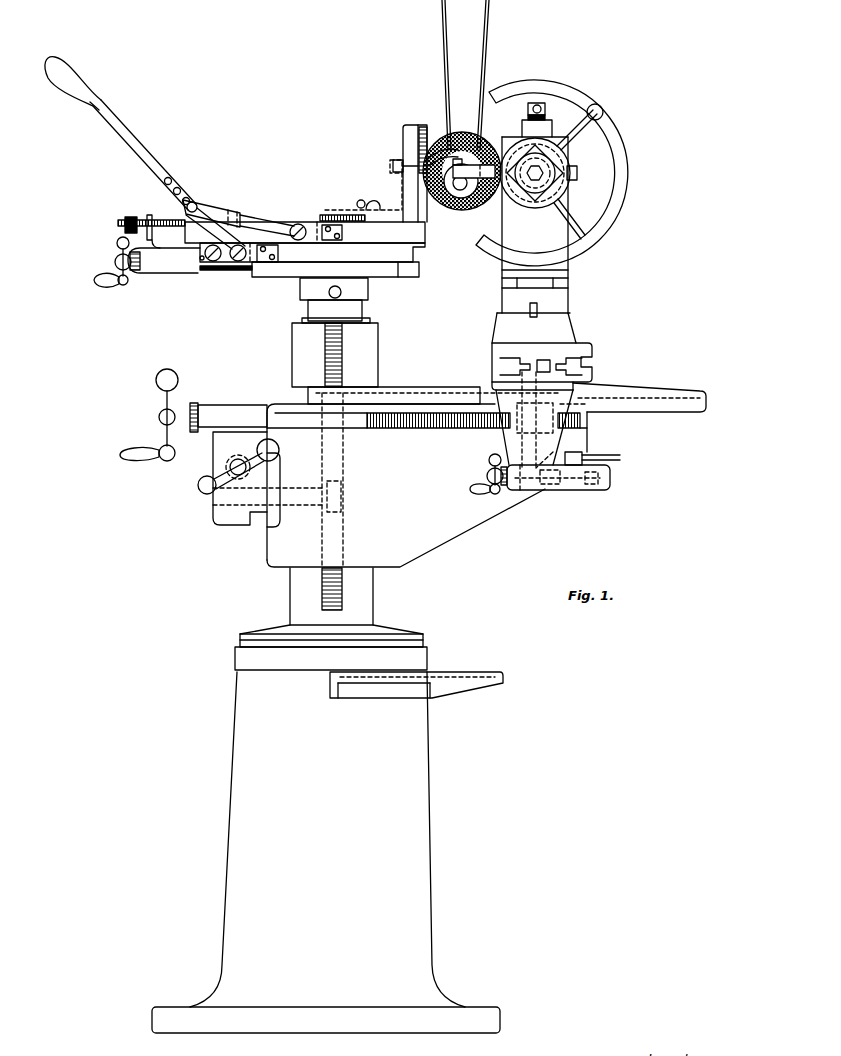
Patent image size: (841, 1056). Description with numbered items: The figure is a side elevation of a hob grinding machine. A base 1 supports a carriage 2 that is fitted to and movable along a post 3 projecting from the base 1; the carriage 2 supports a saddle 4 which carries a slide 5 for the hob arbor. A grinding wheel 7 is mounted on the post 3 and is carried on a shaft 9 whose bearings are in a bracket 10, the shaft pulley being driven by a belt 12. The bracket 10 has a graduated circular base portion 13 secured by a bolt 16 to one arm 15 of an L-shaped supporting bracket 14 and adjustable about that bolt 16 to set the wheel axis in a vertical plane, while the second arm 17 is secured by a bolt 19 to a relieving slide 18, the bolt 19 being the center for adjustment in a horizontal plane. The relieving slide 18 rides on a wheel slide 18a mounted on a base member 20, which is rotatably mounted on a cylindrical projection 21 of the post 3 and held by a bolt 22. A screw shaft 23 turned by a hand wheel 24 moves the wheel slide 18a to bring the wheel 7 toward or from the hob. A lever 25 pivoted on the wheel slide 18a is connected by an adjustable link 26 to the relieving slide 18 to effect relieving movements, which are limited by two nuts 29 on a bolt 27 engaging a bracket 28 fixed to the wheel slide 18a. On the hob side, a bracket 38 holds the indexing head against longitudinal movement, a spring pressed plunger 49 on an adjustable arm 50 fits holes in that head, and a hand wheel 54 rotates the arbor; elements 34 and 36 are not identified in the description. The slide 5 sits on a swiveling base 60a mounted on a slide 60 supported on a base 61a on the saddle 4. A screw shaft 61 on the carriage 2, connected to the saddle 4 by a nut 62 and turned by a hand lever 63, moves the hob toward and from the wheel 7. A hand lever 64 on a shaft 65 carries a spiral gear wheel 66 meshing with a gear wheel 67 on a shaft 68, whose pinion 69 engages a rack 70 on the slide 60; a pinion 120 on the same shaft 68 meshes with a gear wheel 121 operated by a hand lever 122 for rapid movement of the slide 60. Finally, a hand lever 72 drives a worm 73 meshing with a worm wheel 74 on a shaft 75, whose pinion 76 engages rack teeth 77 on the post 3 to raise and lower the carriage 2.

The base 1 is at (430, 832).
The carriage 2 is at (450, 538).
The post 3 is at (372, 610).
The saddle 4 is at (630, 390).
The slide 5 is at (569, 300).
The grinding wheel 7 is at (447, 132).
The shaft 9 is at (461, 190).
The bracket 10 is at (427, 222).
The belt 12 is at (483, 61).
The circular base portion 13 is at (425, 126).
The L-shaped supporting bracket 14 is at (375, 199).
The arm 15 is at (405, 128).
The bolt 16 is at (395, 162).
The second arm 17 is at (330, 215).
The relieving slide 18 is at (425, 248).
The wheel slide 18a is at (398, 268).
The bolt 19 is at (359, 200).
The base member 20 is at (418, 274).
The cylindrical projection 21 is at (360, 311).
The bolt 22 is at (329, 292).
The screw shaft 23 is at (226, 271).
The hand wheel 24 is at (121, 286).
The lever 25 is at (145, 142).
The adjustable link 26 is at (250, 222).
The bolt 27 is at (163, 219).
The bracket 28 is at (168, 262).
The nuts 29 is at (130, 216).
The bearing block 34 is at (546, 117).
The oil cup 36 is at (545, 108).
The bracket 38 is at (578, 174).
The spring pressed plunger 49 is at (528, 190).
The arm 50 is at (492, 160).
The hand wheel 54 is at (626, 157).
The slide 60 is at (588, 348).
The swiveling base 60a is at (500, 325).
The screw shaft 61 is at (430, 427).
The base 61a is at (578, 382).
The nut 62 is at (510, 430).
The hand lever 63 is at (160, 433).
The hand lever 64 is at (488, 459).
The shaft 65 is at (494, 492).
The spiral gear wheel 66 is at (553, 456).
The gear wheel 67 is at (548, 486).
The shaft 68 is at (590, 410).
The pinion 69 is at (498, 362).
The rack 70 is at (544, 359).
The hand lever 72 is at (200, 490).
The worm 73 is at (240, 458).
The worm wheel 74 is at (225, 525).
The shaft 75 is at (290, 487).
The pinion 76 is at (342, 481).
The rack teeth 77 is at (343, 370).
The pinion 120 is at (520, 492).
The gear wheel 121 is at (612, 484).
The hand lever 122 is at (622, 457).